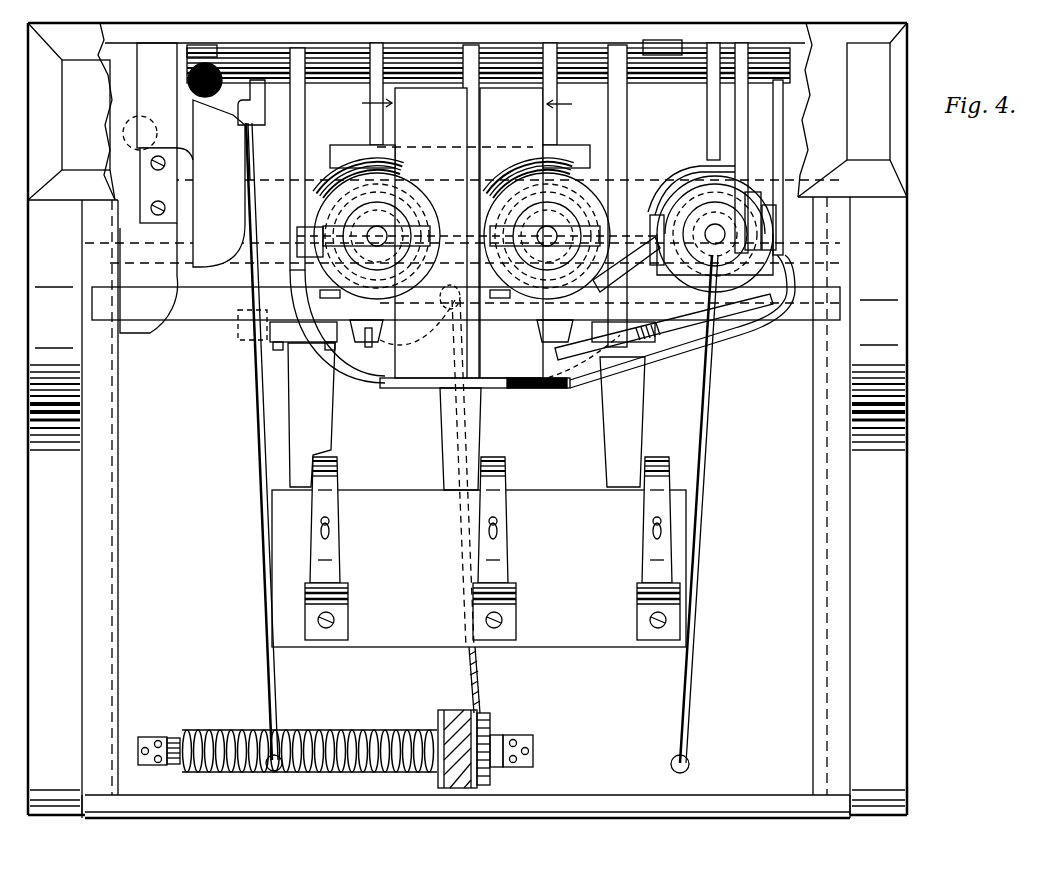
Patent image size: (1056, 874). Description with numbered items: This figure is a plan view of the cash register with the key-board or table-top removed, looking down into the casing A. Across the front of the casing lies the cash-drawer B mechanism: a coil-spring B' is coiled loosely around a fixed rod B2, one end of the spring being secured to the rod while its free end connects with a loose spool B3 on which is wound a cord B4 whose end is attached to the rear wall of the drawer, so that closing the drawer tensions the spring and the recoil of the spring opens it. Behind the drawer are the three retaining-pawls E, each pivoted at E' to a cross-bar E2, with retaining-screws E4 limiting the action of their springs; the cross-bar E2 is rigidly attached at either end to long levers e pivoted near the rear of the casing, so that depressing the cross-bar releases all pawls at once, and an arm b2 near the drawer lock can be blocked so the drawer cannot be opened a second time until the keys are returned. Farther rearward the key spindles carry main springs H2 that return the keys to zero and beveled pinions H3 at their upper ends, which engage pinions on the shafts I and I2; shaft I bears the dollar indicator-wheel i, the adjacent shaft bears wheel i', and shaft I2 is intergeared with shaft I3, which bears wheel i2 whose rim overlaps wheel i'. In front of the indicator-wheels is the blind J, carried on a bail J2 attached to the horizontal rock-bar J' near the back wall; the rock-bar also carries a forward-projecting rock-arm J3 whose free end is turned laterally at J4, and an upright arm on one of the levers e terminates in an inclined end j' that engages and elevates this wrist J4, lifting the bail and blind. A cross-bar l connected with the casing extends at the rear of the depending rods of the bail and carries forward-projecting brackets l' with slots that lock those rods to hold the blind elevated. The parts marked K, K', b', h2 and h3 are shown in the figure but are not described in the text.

The casing A is at (467, 420).
The pawl bracket K is at (156, 188).
The pawl plate K' is at (219, 183).
The blind J is at (542, 229).
The rock-bar J' is at (488, 71).
The bail J2 is at (363, 362).
The rock-arm J3 is at (255, 90).
The lateral member or wrist J4 is at (238, 115).
The inclined or beveled end j' is at (265, 151).
The main spring H2 is at (330, 185).
The beveled pinion H3 is at (462, 239).
The shaft I is at (478, 241).
The shaft I2 is at (738, 228).
The shaft I3 is at (652, 366).
The housing h2 is at (650, 205).
The housing arm h3 is at (662, 168).
The indicator-wheel i is at (369, 102).
The indicator-wheel i' is at (566, 102).
The indicator-wheel i2 is at (400, 347).
The cross-bar l is at (466, 303).
The bracket l' is at (449, 333).
The bracket b' is at (446, 330).
The arm b2 is at (466, 416).
The lever e is at (714, 440).
The retaining-pawl E is at (491, 520).
The pivot E' is at (492, 600).
The cross-bar E2 is at (479, 568).
The retaining-screw E4 is at (332, 526).
The cash-drawer B is at (309, 740).
The coil-spring B' is at (177, 737).
The rod B2 is at (234, 733).
The spool B3 is at (440, 712).
The cord B4 is at (468, 680).